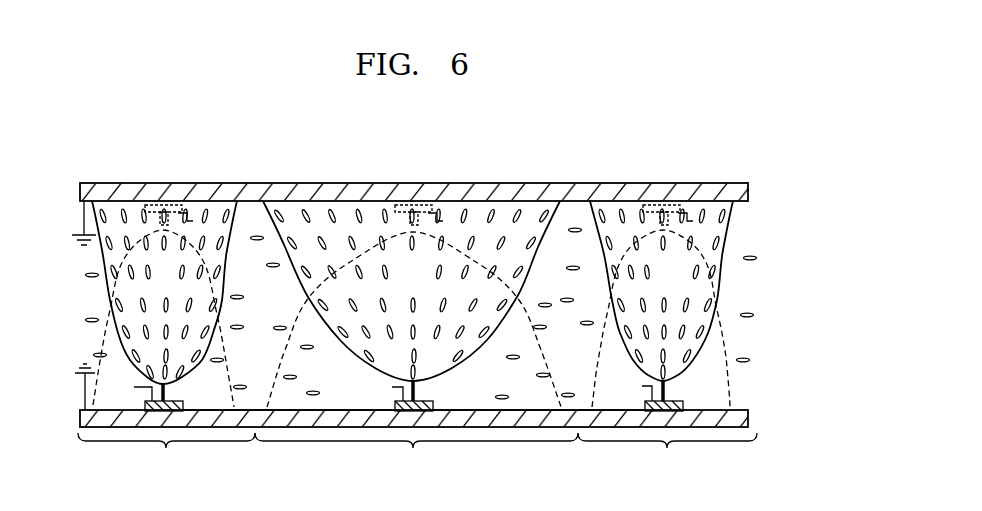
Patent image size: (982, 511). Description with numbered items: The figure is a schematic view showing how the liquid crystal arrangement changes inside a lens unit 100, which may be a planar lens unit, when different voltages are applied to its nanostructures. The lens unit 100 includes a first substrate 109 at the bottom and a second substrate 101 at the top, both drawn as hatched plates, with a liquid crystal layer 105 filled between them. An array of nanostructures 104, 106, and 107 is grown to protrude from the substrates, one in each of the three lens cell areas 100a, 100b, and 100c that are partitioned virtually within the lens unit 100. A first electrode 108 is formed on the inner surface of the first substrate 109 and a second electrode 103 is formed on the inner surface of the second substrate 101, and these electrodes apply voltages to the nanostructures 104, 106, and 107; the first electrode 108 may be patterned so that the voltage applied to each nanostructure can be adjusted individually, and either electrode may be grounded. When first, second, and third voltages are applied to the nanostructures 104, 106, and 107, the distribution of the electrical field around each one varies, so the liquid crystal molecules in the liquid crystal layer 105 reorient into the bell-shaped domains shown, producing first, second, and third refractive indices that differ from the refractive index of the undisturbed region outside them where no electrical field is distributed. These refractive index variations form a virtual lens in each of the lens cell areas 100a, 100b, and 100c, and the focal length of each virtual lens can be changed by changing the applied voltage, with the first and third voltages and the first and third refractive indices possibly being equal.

The lens unit 100 is at (100, 170).
The second substrate 101 is at (748, 192).
The second electrode 103 is at (665, 200).
The nanostructure 104 is at (162, 215).
The liquid crystal layer 105 is at (412, 215).
The nanostructure 106 is at (418, 391).
The nanostructure 107 is at (657, 214).
The first electrode 108 is at (683, 404).
The first substrate 109 is at (748, 415).
The lens cell area 100a is at (166, 453).
The lens cell area 100b is at (416, 453).
The lens cell area 100c is at (667, 452).